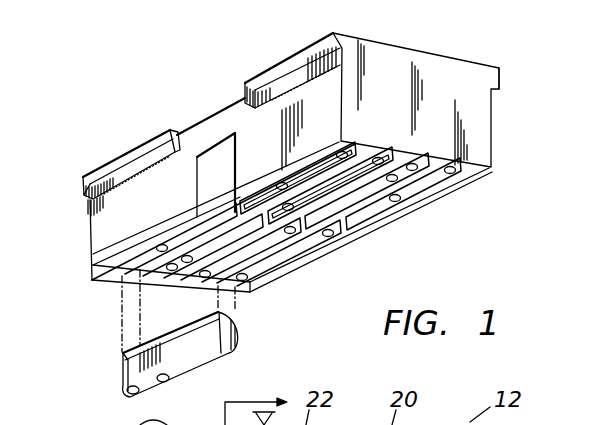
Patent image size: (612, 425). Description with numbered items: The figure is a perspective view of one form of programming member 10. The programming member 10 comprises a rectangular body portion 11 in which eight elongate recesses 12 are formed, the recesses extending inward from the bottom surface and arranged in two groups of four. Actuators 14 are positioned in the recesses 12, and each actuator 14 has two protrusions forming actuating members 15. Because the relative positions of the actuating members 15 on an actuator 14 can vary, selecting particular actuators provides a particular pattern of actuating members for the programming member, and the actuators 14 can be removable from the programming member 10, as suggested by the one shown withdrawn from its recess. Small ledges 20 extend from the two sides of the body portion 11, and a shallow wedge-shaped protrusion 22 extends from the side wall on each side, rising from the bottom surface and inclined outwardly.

The programming member 10 is at (401, 36).
The rectangular body portion 11 is at (493, 133).
The elongate recesses 12 is at (158, 255).
The actuators 14 is at (363, 217).
The actuating members 15 is at (456, 177).
The small ledges 20 is at (140, 153).
The wedge-shaped protrusion 22 is at (207, 165).